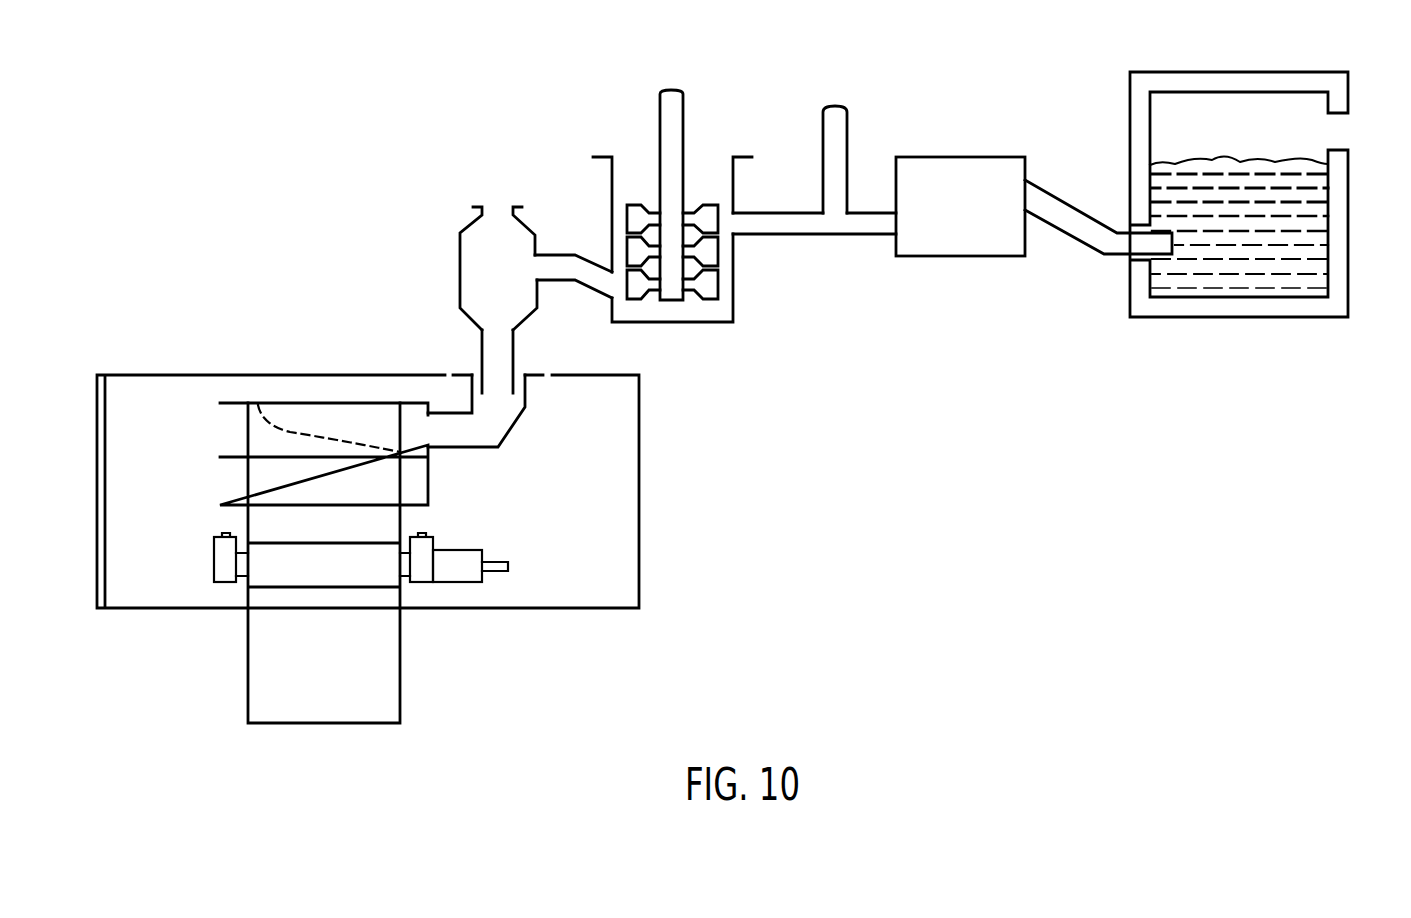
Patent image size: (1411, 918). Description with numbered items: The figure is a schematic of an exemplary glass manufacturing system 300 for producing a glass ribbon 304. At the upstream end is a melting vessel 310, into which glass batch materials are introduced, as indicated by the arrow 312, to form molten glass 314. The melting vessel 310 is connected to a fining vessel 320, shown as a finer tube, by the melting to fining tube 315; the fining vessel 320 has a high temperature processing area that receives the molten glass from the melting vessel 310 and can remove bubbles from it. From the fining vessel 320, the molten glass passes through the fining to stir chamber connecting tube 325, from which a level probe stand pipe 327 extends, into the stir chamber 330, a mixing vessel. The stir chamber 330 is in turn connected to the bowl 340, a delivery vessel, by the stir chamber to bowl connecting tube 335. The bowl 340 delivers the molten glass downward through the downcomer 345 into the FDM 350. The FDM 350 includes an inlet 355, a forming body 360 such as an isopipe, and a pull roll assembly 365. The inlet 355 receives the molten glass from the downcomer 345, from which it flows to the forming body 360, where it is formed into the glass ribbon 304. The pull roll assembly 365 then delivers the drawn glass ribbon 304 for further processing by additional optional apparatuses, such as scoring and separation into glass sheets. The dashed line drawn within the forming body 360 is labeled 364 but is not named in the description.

The glass manufacturing system 300 is at (355, 148).
The glass ribbon 304 is at (400, 628).
The melting vessel 310 is at (1260, 326).
The arrow 312 is at (1345, 133).
The molten glass 314 is at (1235, 160).
The melting to fining tube 315 is at (1075, 205).
The fining vessel 320 is at (962, 157).
The fining to stir chamber connecting tube 325 is at (783, 237).
The level probe stand pipe 327 is at (823, 125).
The stir chamber 330 is at (612, 195).
The stir chamber to bowl connecting tube 335 is at (553, 283).
The bowl 340 is at (460, 258).
The downcomer 345 is at (482, 340).
The FDM 350 is at (186, 362).
The inlet 355 is at (527, 407).
The forming body 360 is at (220, 420).
The coating / material layer 364 is at (330, 408).
The pull roll assembly 365 is at (214, 560).